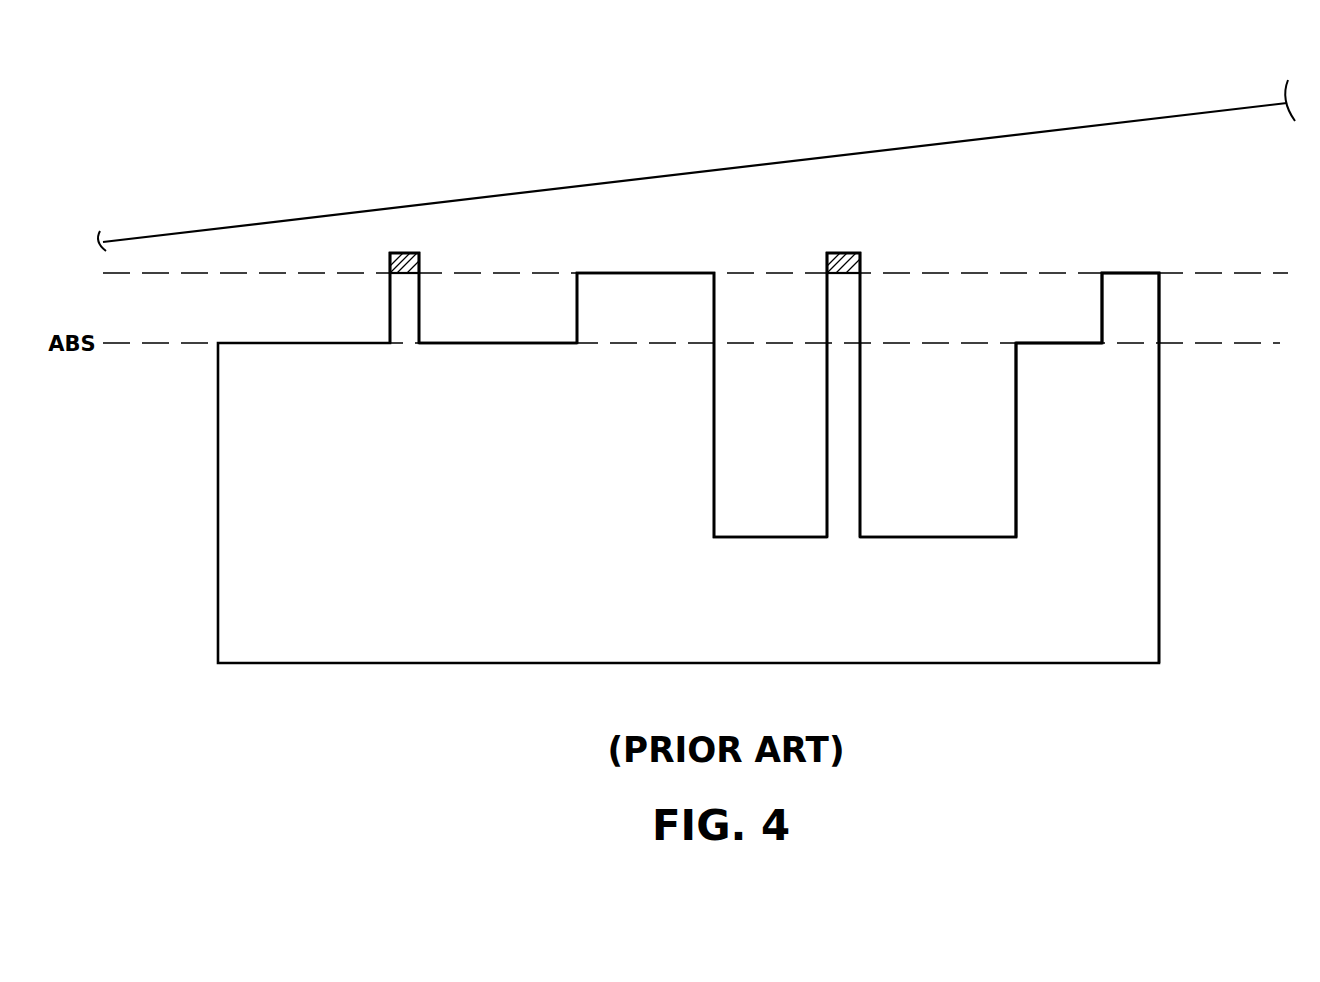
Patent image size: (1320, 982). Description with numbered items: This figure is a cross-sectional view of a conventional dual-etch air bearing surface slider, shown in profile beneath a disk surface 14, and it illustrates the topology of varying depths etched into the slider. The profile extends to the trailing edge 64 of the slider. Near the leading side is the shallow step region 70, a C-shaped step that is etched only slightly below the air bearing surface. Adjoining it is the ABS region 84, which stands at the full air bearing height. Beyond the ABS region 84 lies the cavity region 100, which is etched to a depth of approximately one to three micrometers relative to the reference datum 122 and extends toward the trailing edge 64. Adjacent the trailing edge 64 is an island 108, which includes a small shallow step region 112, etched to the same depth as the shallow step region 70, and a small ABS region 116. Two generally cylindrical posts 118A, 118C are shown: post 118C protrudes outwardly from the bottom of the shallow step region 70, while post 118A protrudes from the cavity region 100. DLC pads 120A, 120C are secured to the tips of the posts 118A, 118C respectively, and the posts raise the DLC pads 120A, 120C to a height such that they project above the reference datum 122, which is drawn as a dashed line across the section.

The disk surface 14 is at (651, 176).
The trailing edge 64 is at (1161, 456).
The shallow step region 70 is at (498, 330).
The ABS region 84 is at (645, 295).
The cavity region 100 is at (865, 440).
The island 108 is at (1087, 468).
The small shallow step region 112 is at (1059, 328).
The small ABS region 116 is at (1130, 293).
The post 118A is at (837, 479).
The post 118C is at (402, 332).
The DLC pad 120A is at (844, 248).
The DLC pad 120C is at (409, 247).
The reference datum 122 is at (667, 273).